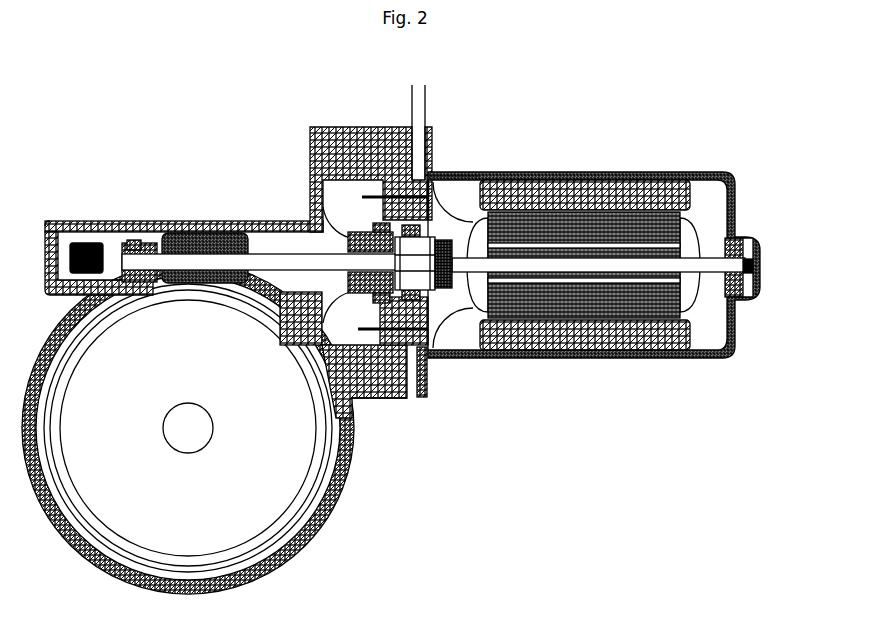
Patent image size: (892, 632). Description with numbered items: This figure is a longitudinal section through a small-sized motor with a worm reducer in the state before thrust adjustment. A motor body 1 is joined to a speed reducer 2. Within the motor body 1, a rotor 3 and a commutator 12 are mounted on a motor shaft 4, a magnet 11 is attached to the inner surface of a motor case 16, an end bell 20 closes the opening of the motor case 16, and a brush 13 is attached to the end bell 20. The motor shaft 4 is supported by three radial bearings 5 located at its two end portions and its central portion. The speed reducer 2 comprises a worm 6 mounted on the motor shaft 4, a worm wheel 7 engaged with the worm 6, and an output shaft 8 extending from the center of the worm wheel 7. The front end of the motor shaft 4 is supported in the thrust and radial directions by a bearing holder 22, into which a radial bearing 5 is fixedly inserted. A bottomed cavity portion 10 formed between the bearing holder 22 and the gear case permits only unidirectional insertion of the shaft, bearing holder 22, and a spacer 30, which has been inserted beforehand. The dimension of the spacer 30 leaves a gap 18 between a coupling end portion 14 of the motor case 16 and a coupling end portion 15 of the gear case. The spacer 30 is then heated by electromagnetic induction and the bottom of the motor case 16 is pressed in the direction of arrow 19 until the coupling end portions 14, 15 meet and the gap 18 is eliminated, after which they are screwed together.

The motor body 1 is at (607, 262).
The speed reducer 2 is at (237, 324).
The rotor 3 is at (578, 220).
The motor shaft 4 is at (258, 258).
The radial bearing 5 is at (140, 247).
The worm 6 is at (205, 238).
The worm wheel 7 is at (258, 505).
The output shaft 8 is at (205, 433).
The cavity portion 10 is at (68, 247).
The magnet 11 is at (528, 186).
The commutator 12 is at (423, 277).
The brush 13 is at (462, 184).
The coupling end portion of the motor case 14 is at (427, 383).
The coupling end portion of the gear case 15 is at (390, 398).
The motor case 16 is at (632, 172).
The gap 18 is at (386, 95).
The arrow 19 is at (775, 272).
The end bell 20 is at (433, 170).
The bearing holder 22 is at (115, 243).
The spacer 30 is at (80, 247).